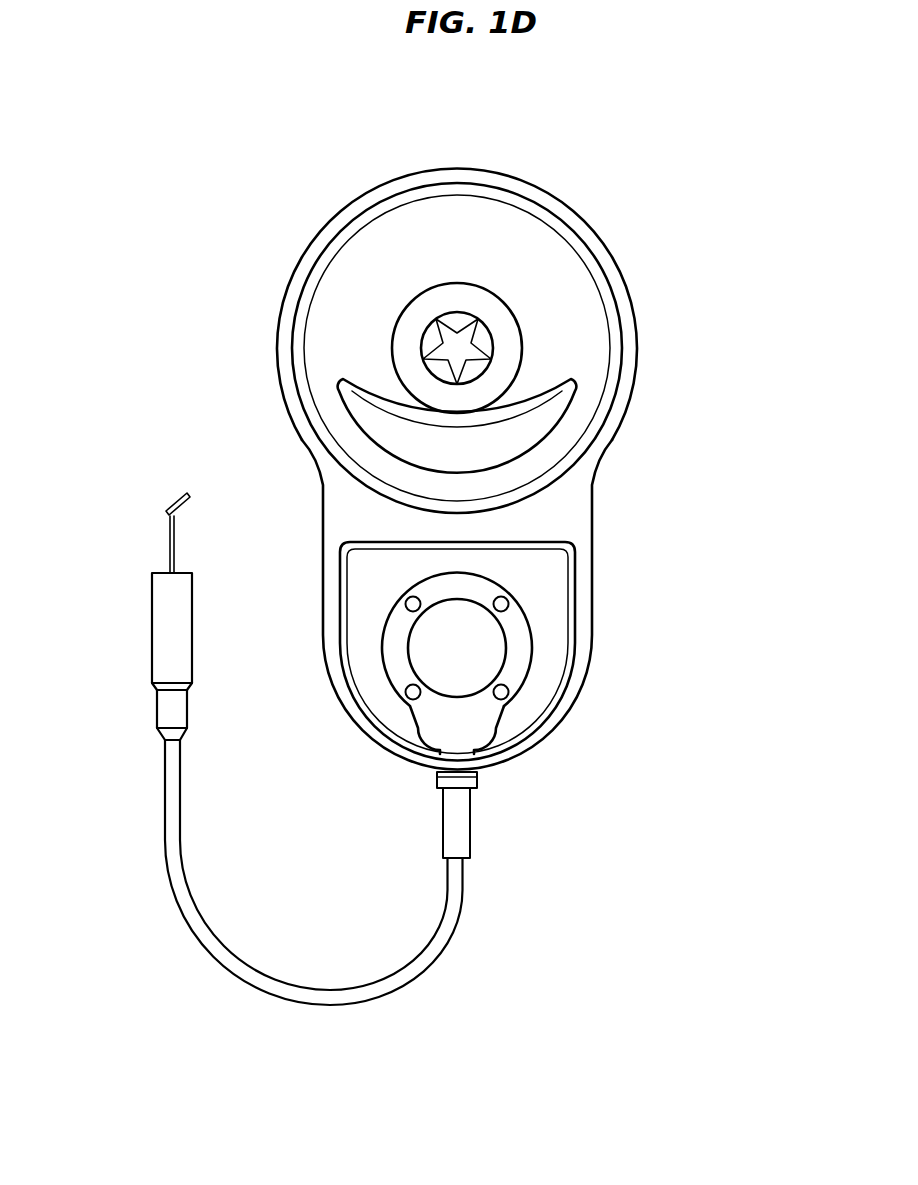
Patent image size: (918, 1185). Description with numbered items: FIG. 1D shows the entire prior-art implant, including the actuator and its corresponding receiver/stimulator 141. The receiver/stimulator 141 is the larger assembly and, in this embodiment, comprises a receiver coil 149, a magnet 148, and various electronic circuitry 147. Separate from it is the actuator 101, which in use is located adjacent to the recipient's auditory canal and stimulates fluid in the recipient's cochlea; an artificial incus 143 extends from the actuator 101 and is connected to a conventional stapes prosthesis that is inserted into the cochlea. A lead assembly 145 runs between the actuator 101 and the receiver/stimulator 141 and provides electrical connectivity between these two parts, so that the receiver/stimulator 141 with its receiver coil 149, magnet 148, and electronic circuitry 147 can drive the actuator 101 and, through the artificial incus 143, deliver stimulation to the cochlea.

The receiver/stimulator 141 is at (723, 158).
The receiver coil 149 is at (582, 233).
The magnet 148 is at (515, 317).
The electronic circuitry 147 is at (575, 656).
The lead assembly 145 is at (213, 950).
The actuator 101 is at (152, 632).
The artificial incus 143 is at (173, 498).